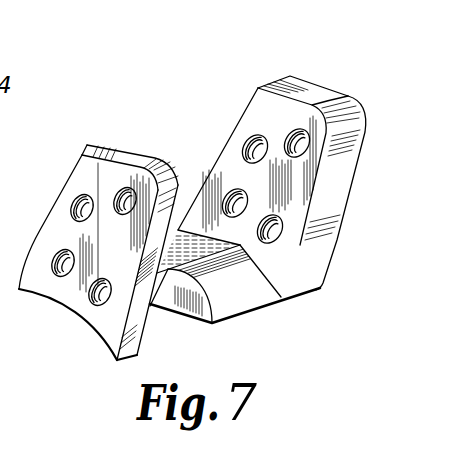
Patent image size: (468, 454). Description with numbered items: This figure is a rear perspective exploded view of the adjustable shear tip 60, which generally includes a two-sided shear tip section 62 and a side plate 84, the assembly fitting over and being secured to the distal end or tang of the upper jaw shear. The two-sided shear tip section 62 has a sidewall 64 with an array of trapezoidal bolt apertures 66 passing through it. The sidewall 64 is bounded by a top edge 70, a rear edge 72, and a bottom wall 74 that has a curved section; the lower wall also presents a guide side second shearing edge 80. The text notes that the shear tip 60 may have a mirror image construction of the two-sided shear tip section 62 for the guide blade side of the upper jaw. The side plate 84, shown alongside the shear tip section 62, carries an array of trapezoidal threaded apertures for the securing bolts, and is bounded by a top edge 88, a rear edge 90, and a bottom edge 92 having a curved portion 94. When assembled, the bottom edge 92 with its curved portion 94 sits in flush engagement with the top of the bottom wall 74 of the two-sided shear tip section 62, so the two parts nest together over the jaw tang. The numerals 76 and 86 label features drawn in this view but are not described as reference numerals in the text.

The adjustable shear tip 60 is at (198, 100).
The two-sided shear tip section 62 is at (367, 112).
The sidewall 64 is at (303, 188).
The trapezoidal bolt apertures 66 is at (302, 126).
The top edge 70 is at (312, 80).
The rear edge 72 is at (333, 227).
The bottom wall 74 is at (262, 306).
The bend radius 76 is at (262, 306).
The guide side second shearing edge 80 is at (188, 318).
The side plate 84 is at (90, 163).
The aperture 86 is at (63, 277).
The top edge 88 is at (137, 157).
The rear edge 90 is at (133, 326).
The bottom edge 92 is at (83, 312).
The curved portion 94 is at (112, 346).